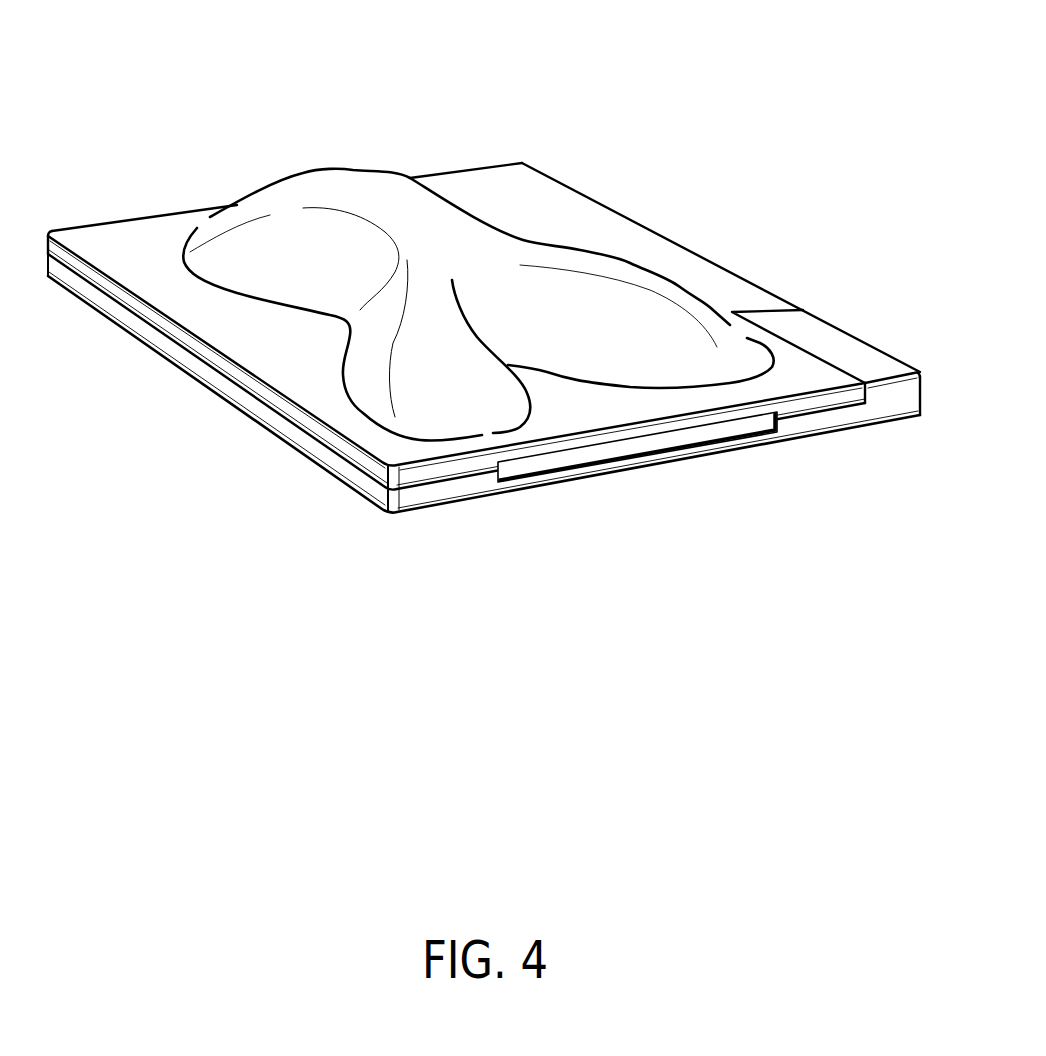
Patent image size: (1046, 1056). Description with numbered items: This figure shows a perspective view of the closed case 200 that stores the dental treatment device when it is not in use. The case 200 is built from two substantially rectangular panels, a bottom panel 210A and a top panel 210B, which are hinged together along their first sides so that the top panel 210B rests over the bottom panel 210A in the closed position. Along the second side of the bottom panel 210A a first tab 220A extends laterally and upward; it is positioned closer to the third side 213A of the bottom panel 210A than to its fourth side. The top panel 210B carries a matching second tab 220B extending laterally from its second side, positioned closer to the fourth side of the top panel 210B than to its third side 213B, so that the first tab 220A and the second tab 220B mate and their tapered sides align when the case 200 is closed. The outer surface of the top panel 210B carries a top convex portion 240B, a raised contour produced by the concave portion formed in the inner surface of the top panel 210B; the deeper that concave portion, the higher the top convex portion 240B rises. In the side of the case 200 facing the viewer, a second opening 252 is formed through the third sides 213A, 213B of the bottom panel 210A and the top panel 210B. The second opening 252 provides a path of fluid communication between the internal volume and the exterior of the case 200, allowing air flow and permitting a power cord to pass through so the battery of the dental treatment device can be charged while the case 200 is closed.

The case 200 is at (147, 96).
The bottom panel 210A is at (157, 355).
The top panel 210B is at (110, 223).
The first tab 220A is at (853, 353).
The second tab 220B is at (718, 262).
The third side of the bottom panel 213A is at (900, 407).
The third side of the top panel 213B is at (817, 402).
The top convex portion 240B is at (432, 218).
The second opening 252 is at (685, 435).